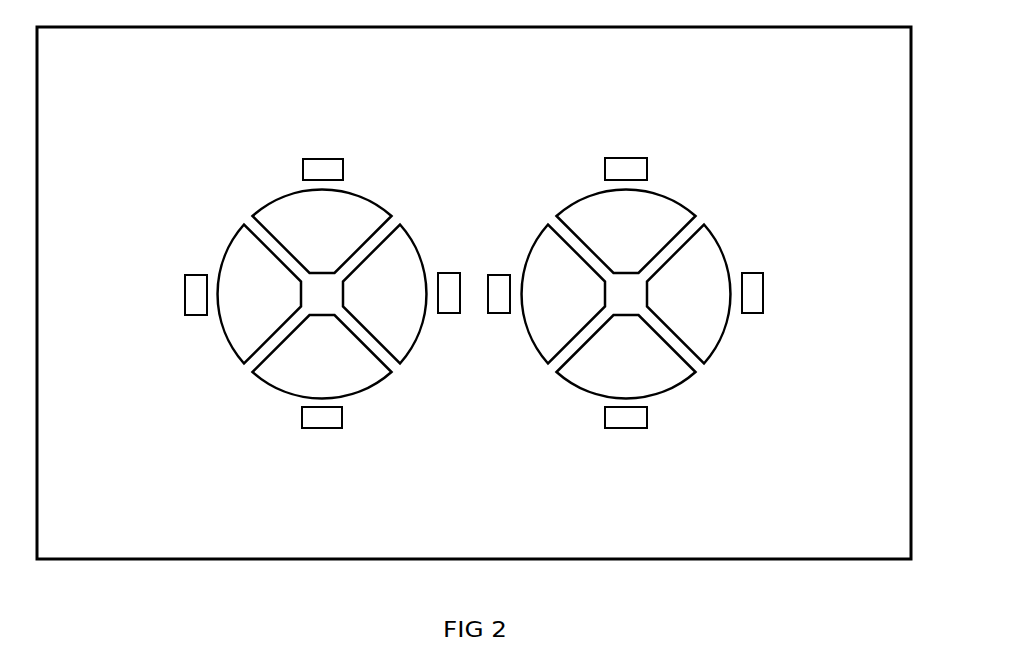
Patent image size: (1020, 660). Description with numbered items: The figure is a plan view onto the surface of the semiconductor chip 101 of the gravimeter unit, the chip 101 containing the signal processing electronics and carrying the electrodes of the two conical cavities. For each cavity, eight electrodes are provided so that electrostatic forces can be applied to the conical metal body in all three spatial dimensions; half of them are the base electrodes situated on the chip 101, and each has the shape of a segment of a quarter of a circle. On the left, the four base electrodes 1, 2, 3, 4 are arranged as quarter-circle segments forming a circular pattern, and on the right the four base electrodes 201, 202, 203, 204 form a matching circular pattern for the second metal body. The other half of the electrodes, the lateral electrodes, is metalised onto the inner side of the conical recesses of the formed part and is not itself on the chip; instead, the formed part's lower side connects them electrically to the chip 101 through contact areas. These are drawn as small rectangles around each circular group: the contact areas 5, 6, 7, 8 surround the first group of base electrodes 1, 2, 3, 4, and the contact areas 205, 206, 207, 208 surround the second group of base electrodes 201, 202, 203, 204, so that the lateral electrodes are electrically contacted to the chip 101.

The base electrode 1 is at (235, 330).
The base electrode 2 is at (357, 208).
The base electrode 3 is at (407, 328).
The base electrode 4 is at (283, 378).
The contact area 5 is at (185, 293).
The contact area 6 is at (323, 158).
The contact area 7 is at (448, 273).
The contact area 8 is at (322, 428).
The semiconductor chip 101 is at (678, 547).
The base electrode 201 is at (537, 262).
The base electrode 202 is at (663, 208).
The base electrode 203 is at (710, 328).
The base electrode 204 is at (583, 377).
The contact area 205 is at (500, 315).
The contact area 206 is at (626, 158).
The contact area 207 is at (765, 293).
The contact area 208 is at (622, 428).